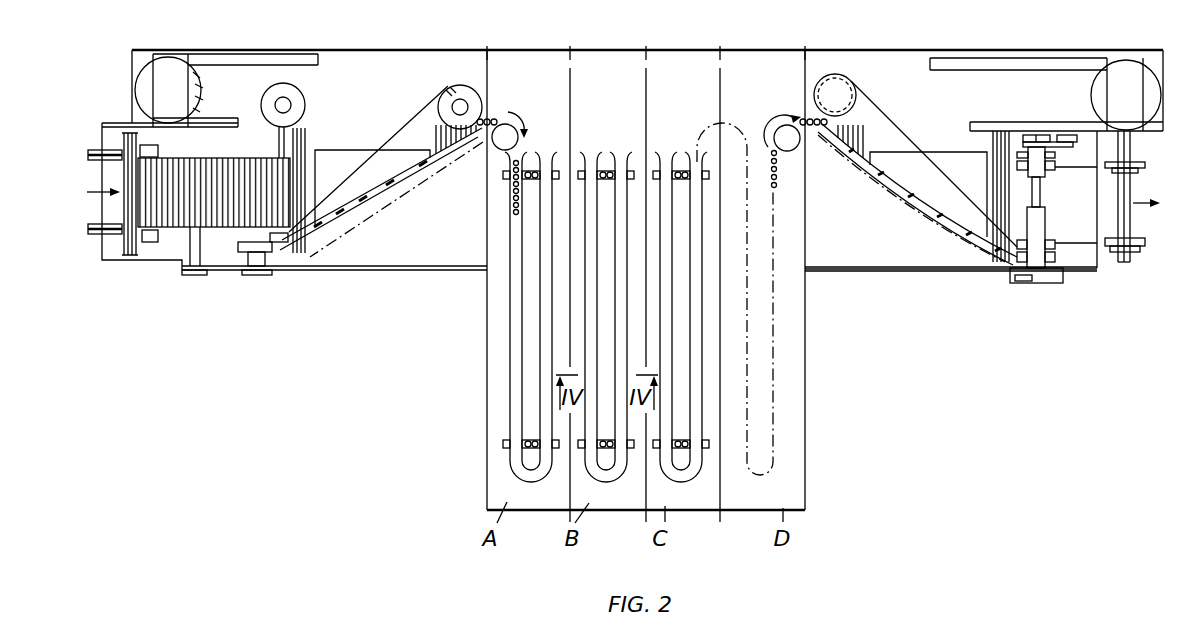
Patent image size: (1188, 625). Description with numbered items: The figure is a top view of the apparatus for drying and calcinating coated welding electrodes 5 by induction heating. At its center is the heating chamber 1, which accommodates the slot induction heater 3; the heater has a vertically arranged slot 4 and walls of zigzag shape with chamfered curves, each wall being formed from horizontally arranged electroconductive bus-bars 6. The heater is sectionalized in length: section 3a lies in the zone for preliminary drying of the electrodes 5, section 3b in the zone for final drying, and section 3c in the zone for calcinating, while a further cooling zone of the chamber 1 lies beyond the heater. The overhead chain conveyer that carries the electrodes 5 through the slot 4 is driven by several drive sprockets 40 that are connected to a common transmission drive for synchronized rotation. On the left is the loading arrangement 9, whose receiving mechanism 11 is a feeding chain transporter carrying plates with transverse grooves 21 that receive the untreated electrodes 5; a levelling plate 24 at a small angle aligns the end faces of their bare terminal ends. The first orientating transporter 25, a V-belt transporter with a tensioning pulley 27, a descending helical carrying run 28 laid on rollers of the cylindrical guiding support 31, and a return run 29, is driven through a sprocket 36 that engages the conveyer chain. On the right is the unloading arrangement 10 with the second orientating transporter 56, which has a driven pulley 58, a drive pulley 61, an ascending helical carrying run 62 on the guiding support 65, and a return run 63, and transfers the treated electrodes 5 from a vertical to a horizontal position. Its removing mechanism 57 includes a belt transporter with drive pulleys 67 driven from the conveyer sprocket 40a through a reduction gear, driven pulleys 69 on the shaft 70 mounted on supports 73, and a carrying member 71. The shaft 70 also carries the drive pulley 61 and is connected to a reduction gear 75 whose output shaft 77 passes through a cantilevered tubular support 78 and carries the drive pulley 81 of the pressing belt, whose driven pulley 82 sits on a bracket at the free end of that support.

The heating chamber 1 is at (487, 497).
The slot induction heater 3 is at (494, 393).
The section of the induction heater 3a is at (532, 490).
The section of the induction heater 3b is at (607, 490).
The section of the induction heater 3c is at (684, 490).
The slot 4 is at (700, 365).
The coated welding electrodes 5 is at (1125, 262).
The electroconductive bus-bars 6 is at (510, 295).
The loading arrangement 9 is at (228, 275).
The unloading arrangement 10 is at (967, 278).
The receiving mechanism 11 is at (148, 243).
The transverse grooves 21 is at (239, 160).
The levelling plate 24 is at (152, 125).
The first orientating transporter 25 is at (392, 210).
The tensioning pulley 27 is at (262, 252).
The carrying run 28 is at (355, 222).
The return run 29 is at (346, 190).
The guiding support 31 is at (403, 167).
The sprocket 36 is at (470, 96).
The drive sprockets 40 is at (646, 124).
The sprocket of the chain conveyer 40a is at (1110, 76).
The second orientating transporter 56 is at (906, 205).
The removing mechanism 57 is at (1132, 231).
The driven pulley 58 is at (838, 82).
The drive pulley 61 is at (1060, 264).
The carrying run 62 is at (945, 216).
The return run 63 is at (879, 112).
The guiding support 65 is at (945, 161).
The drive pulleys 67 is at (1140, 250).
The driven pulleys 69 is at (1053, 165).
The shaft 70 is at (1034, 195).
The carrying member 71 is at (1076, 242).
The supports 73 is at (1017, 153).
The reduction gear 75 is at (1024, 281).
The output shaft 77 is at (1028, 134).
The tubular support 78 is at (1042, 226).
The drive pulley 81 is at (1040, 133).
The driven pulley 82 is at (1066, 133).